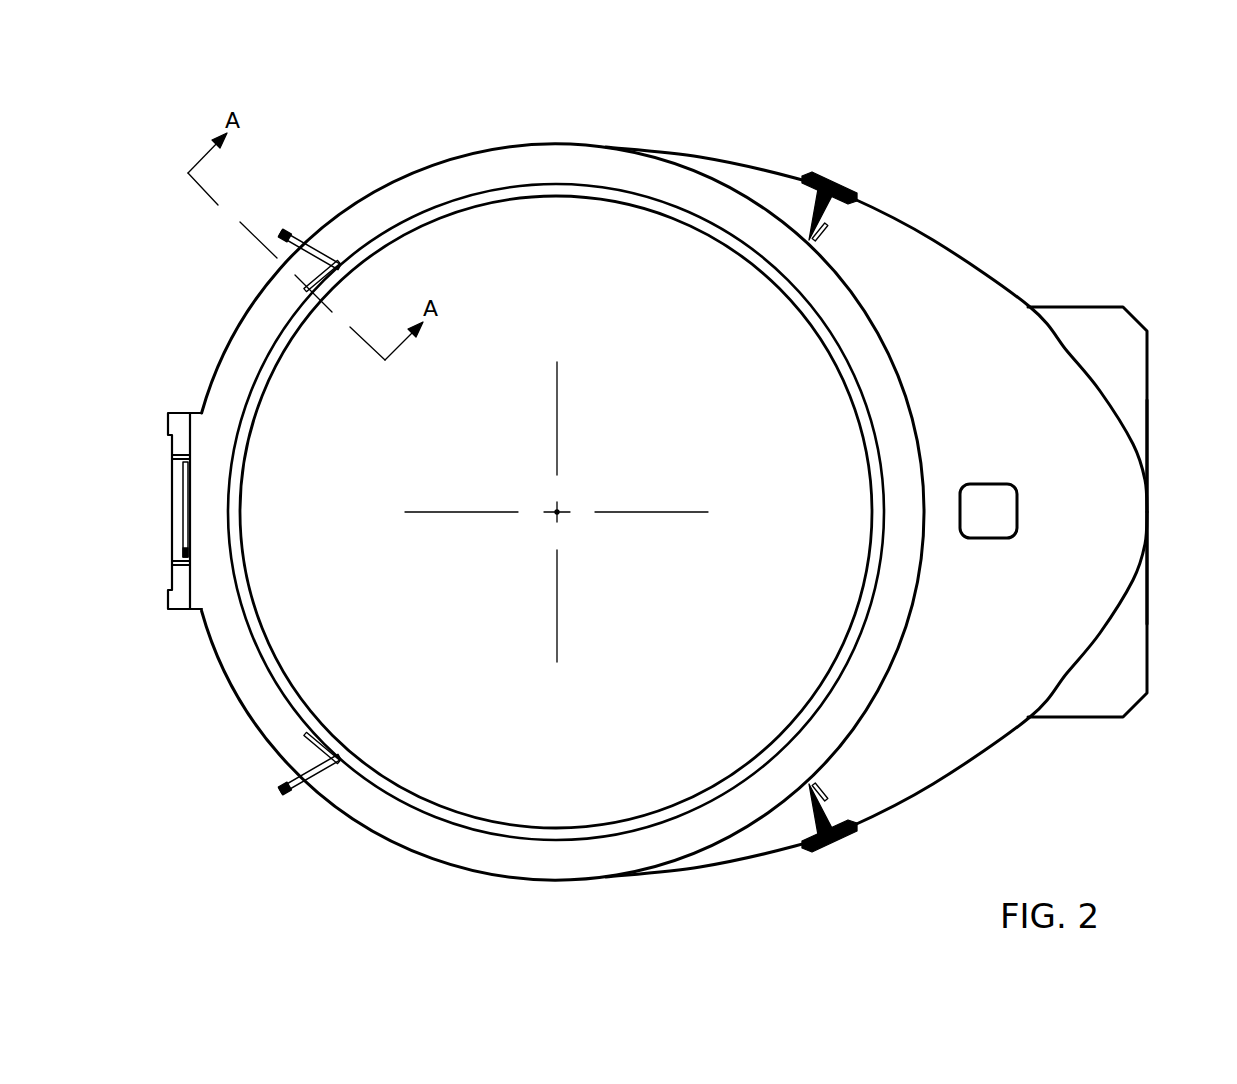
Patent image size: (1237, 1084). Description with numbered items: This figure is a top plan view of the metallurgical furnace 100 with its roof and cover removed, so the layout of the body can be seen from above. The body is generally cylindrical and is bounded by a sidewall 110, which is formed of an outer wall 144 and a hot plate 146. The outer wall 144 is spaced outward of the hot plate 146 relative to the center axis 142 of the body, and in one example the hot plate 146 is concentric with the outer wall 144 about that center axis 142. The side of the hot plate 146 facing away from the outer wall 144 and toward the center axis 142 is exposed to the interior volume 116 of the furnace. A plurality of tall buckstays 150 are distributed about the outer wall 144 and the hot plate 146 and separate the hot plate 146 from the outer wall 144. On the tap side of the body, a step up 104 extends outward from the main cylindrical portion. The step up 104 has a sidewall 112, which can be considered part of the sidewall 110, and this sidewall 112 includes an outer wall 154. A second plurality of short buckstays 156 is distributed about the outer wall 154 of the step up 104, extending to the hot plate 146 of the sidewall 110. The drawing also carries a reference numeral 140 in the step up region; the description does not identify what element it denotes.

The metallurgical furnace 100 is at (995, 120).
The step up 104 is at (1143, 590).
The sidewall 110 is at (772, 236).
The sidewall 112 is at (978, 704).
The interior volume 116 is at (640, 426).
The side wall 140 is at (1114, 502).
The center axis 142 is at (557, 510).
The outer wall 144 is at (823, 253).
The hot plate 146 is at (808, 318).
The tall buckstays 150 is at (317, 231).
The outer wall 154 is at (982, 268).
The short buckstays 156 is at (836, 190).